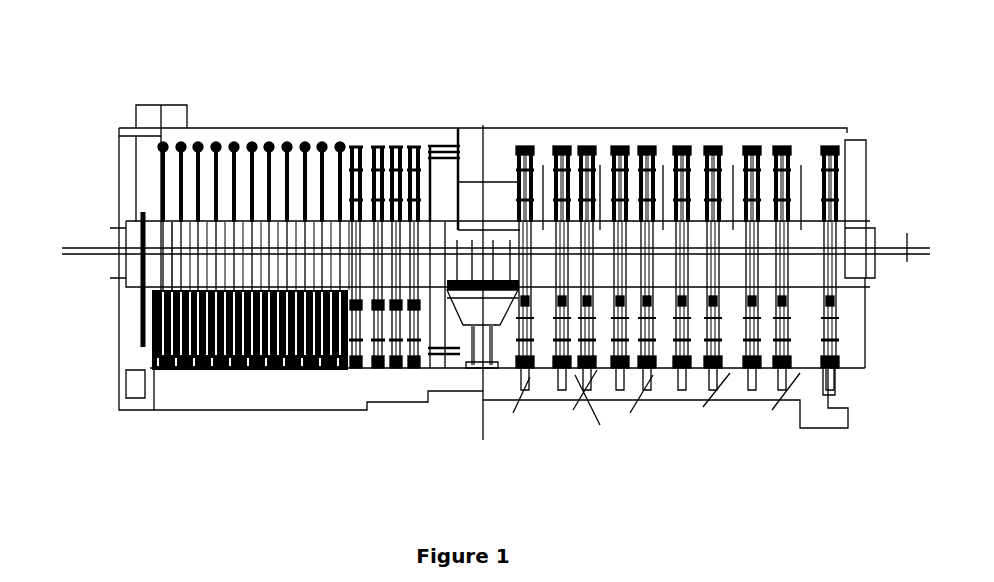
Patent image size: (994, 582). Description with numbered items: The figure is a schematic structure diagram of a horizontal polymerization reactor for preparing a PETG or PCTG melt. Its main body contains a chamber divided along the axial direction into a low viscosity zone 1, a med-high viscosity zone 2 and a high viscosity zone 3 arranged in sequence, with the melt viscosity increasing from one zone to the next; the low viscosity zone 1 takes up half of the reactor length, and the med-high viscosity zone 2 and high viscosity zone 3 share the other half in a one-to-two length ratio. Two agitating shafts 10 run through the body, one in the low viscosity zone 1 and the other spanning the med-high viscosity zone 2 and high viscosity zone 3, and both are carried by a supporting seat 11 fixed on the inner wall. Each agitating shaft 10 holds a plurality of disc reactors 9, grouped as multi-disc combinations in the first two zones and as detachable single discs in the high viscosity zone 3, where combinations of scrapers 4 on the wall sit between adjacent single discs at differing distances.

The low viscosity zone 1 is at (847, 70).
The med-high viscosity zone 2 is at (343, 70).
The high viscosity zone 3 is at (119, 70).
The scraper 4 is at (183, 372).
The disc reactor 9 is at (195, 167).
The agitating shaft 10 is at (150, 303).
The supporting seat 11 is at (470, 322).